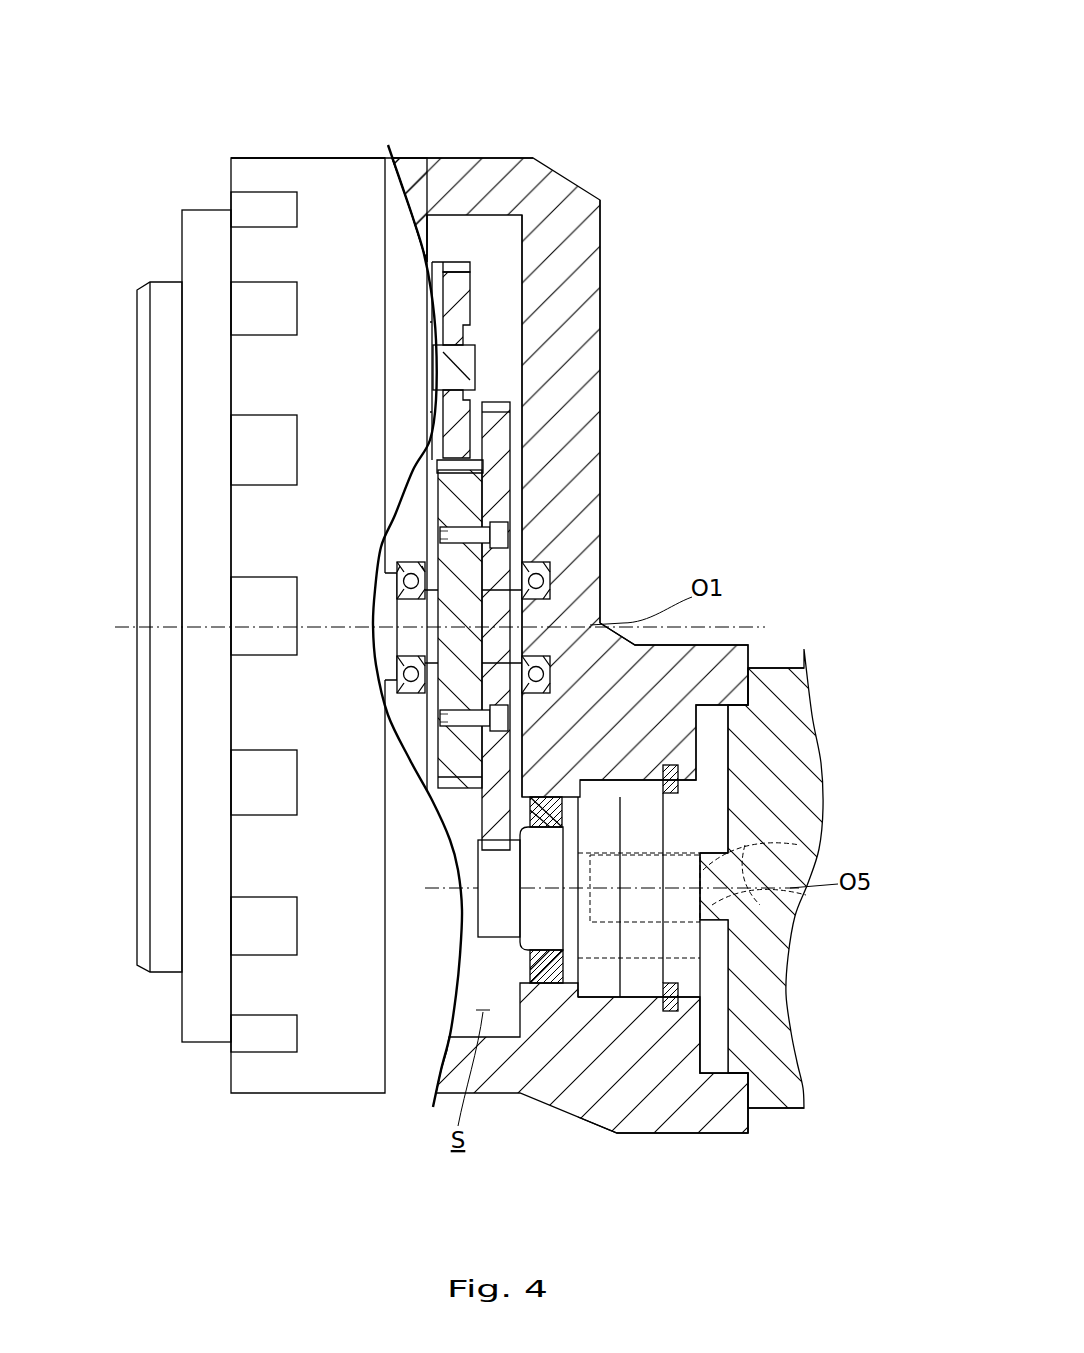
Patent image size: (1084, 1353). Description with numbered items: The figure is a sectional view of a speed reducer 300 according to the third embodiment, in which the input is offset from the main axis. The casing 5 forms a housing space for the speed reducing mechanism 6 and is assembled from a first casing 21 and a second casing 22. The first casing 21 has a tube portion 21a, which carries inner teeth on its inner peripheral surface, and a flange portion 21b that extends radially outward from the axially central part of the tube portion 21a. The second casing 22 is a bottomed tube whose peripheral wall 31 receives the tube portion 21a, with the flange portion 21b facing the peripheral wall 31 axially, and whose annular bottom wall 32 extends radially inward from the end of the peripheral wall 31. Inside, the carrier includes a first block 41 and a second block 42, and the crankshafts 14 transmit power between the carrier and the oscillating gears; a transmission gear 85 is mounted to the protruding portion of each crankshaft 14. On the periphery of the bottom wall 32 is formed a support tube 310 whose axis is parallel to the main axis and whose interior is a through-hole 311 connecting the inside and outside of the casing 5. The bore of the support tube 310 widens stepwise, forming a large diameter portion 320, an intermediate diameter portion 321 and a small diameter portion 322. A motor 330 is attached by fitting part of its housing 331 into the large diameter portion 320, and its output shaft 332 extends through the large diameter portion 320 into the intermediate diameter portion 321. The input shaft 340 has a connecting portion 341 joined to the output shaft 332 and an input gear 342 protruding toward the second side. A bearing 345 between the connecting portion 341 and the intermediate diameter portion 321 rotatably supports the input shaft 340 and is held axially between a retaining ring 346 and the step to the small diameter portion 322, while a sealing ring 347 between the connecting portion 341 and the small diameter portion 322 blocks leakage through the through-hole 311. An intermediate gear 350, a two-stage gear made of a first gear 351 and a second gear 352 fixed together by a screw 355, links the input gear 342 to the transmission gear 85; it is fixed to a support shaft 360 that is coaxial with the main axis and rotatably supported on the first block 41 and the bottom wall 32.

The casing 5 is at (445, 50).
The speed reducing mechanism 6 is at (130, 778).
The crankshaft 14 is at (458, 362).
The first casing 21 is at (340, 155).
The tube portion 21a is at (207, 222).
The flange portion 21b is at (262, 168).
The second casing 22 is at (428, 155).
The peripheral wall 31 is at (496, 168).
The bottom wall 32 is at (590, 385).
The first block 41 is at (508, 533).
The second block 42 is at (167, 962).
The transmission gear 85 is at (460, 308).
The speed reducer 300 is at (752, 90).
The support tube 310 is at (898, 632).
The through-hole 311 is at (775, 872).
The large diameter portion 320 is at (740, 660).
The intermediate diameter portion 321 is at (705, 750).
The small diameter portion 322 is at (605, 797).
The motor 330 is at (775, 1112).
The housing 331 is at (777, 1003).
The output shaft 332 is at (713, 915).
The input shaft 340 is at (600, 985).
The connecting portion 341 is at (680, 950).
The input gear 342 is at (490, 910).
The bearing 345 is at (640, 985).
The retaining ring 346 is at (672, 765).
The sealing ring 347 is at (548, 990).
The intermediate gear 350 is at (678, 430).
The first gear 351 is at (500, 465).
The second gear 352 is at (467, 492).
The screw 355 is at (510, 717).
The support shaft 360 is at (537, 612).